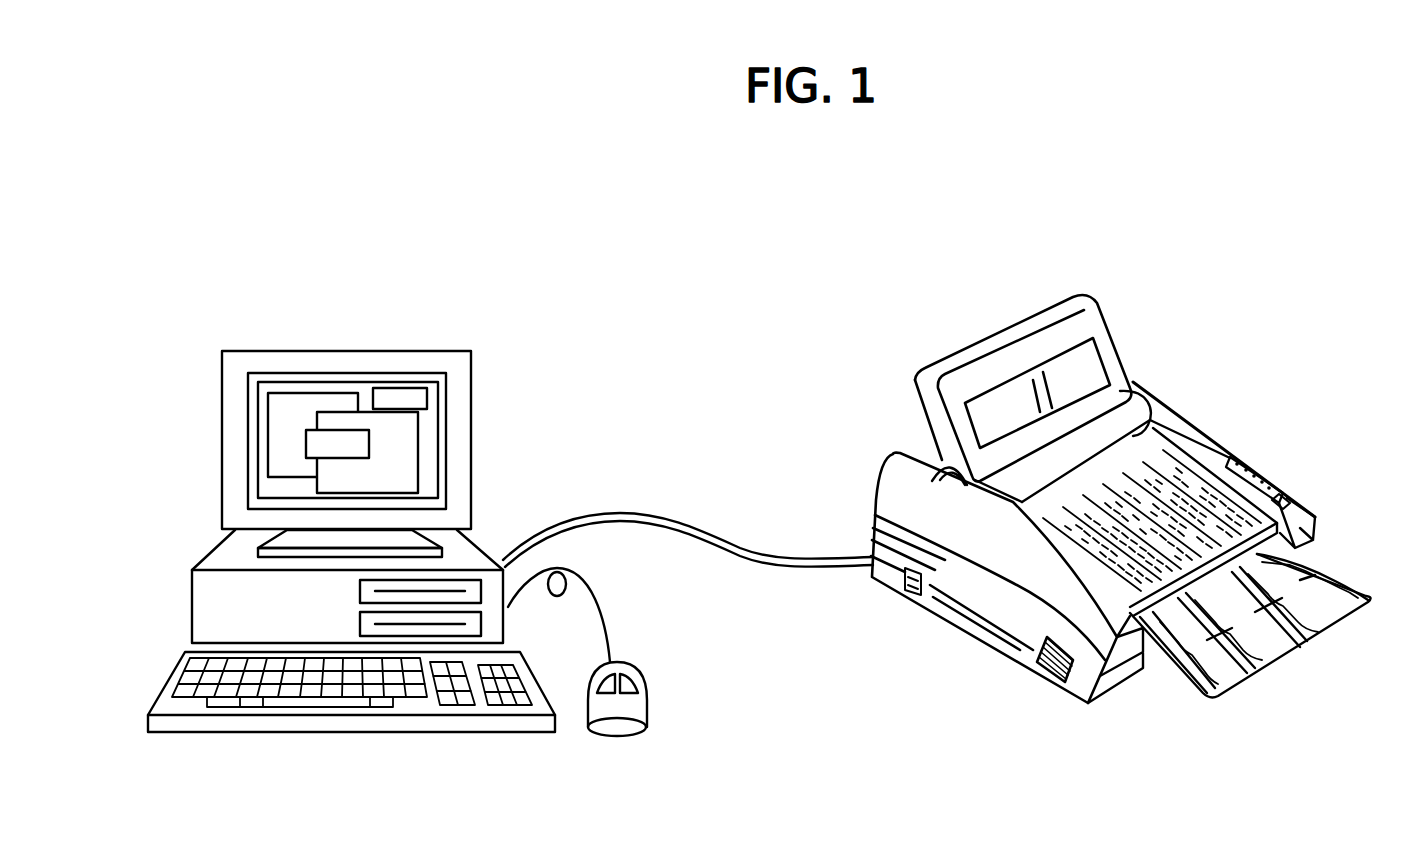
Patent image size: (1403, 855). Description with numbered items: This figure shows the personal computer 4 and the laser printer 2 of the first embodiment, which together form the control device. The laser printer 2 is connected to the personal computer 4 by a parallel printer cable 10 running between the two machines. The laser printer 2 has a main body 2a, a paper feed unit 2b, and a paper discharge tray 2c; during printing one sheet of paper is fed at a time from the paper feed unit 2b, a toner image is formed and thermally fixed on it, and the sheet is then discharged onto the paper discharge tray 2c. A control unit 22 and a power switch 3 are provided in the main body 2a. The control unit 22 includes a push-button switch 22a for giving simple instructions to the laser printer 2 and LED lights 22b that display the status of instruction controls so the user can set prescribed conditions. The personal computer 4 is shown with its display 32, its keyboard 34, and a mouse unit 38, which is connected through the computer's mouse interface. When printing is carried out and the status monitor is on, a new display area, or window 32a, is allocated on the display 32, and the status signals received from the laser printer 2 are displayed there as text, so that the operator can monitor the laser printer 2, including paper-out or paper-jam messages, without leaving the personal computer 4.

The laser printer 2 is at (928, 271).
The main body 2a is at (967, 605).
The paper feed unit 2b is at (1070, 323).
The paper discharge tray 2c is at (1297, 633).
The power switch 3 is at (908, 594).
The personal computer 4 is at (463, 271).
The parallel printer cable 10 is at (707, 526).
The control unit 22 is at (1230, 460).
The push-button switch 22a is at (1280, 497).
The LED lights 22b is at (1247, 470).
The display 32 is at (472, 403).
The window 32a is at (312, 443).
The keyboard 34 is at (476, 724).
The mouse unit 38 is at (635, 670).